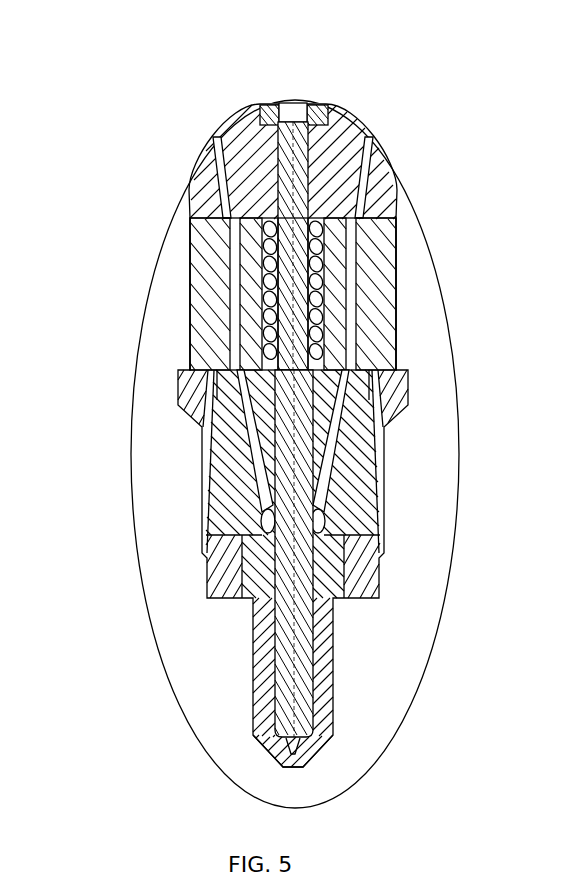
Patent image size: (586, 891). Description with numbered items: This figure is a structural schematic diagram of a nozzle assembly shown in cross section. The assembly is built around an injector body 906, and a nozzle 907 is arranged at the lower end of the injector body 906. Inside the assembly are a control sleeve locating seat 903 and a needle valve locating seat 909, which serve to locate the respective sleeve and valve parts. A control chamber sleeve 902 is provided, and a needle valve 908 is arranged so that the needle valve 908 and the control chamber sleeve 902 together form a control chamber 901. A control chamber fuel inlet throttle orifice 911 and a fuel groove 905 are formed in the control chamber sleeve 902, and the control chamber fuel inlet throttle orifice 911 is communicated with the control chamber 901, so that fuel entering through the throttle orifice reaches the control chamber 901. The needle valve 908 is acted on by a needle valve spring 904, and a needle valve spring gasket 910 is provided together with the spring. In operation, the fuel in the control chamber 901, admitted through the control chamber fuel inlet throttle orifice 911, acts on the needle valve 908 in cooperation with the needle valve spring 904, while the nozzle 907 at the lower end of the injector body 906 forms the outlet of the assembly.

The control chamber 901 is at (296, 102).
The control chamber sleeve 902 is at (323, 110).
The control sleeve locating seat 903 is at (382, 195).
The needle valve spring 904 is at (323, 292).
The fuel groove 905 is at (365, 490).
The injector body 906 is at (322, 650).
The nozzle 907 is at (286, 760).
The needle valve 908 is at (292, 588).
The needle valve locating seat 909 is at (230, 358).
The needle valve spring gasket 910 is at (236, 214).
The control chamber fuel inlet throttle orifice 911 is at (266, 113).